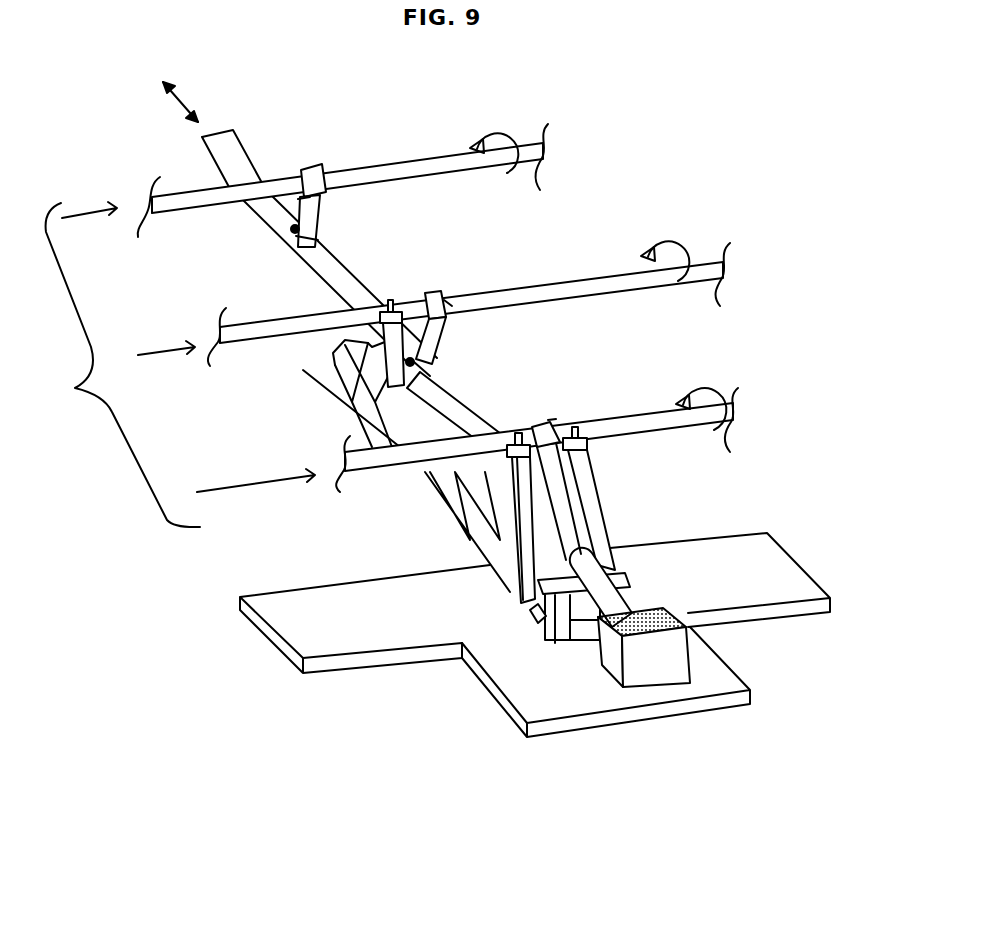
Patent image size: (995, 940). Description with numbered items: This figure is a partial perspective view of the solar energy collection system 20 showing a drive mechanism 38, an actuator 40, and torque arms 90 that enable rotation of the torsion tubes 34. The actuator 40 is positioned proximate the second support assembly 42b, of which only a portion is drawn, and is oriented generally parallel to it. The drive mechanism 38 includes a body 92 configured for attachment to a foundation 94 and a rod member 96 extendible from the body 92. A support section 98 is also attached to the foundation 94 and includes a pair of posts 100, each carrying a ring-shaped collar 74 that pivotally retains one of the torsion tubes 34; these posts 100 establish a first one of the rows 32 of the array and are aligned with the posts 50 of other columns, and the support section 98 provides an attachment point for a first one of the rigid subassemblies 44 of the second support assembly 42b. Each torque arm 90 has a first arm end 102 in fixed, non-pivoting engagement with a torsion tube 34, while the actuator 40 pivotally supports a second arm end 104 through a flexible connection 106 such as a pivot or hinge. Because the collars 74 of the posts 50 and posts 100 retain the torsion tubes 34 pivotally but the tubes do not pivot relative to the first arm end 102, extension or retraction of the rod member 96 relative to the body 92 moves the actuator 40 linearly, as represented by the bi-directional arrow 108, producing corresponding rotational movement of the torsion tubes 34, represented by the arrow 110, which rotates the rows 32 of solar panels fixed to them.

The solar energy collection system 20 is at (197, 805).
The rows 32 is at (179, 364).
The torsion tubes 34 is at (404, 160).
The drive mechanism 38 is at (684, 673).
The actuator 40 is at (238, 140).
The second support assembly 42b is at (330, 383).
The rigid subassemblies 44 is at (497, 563).
The posts 50 is at (383, 345).
The ring-shaped collar 74 is at (388, 300).
The torque arms 90 is at (305, 200).
The body 92 is at (610, 667).
The foundation 94 is at (267, 610).
The rod member 96 is at (630, 592).
The support section 98 is at (540, 553).
The posts 100 is at (515, 572).
The first arm end 102 is at (310, 165).
The second arm end 104 is at (318, 238).
The flexible connection 106 is at (297, 238).
The bi-directional arrow 108 is at (178, 96).
The arrow 110 is at (500, 133).